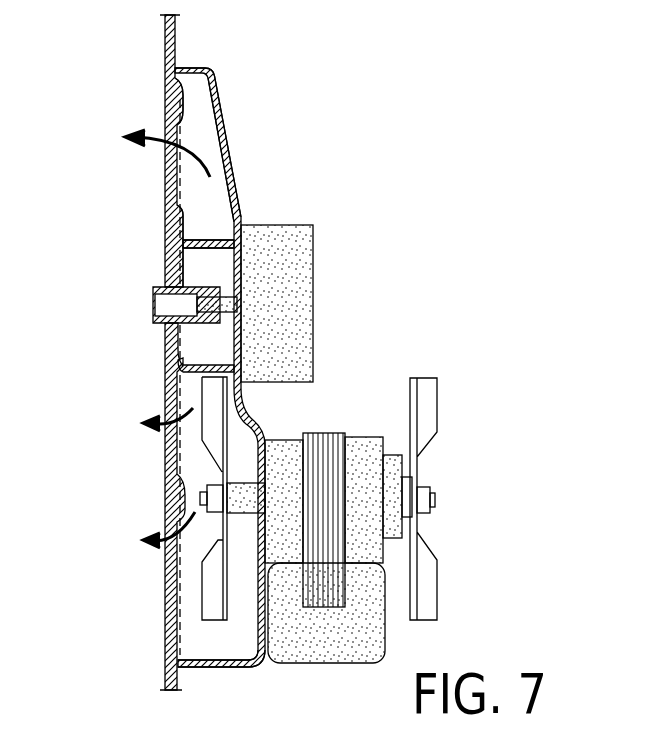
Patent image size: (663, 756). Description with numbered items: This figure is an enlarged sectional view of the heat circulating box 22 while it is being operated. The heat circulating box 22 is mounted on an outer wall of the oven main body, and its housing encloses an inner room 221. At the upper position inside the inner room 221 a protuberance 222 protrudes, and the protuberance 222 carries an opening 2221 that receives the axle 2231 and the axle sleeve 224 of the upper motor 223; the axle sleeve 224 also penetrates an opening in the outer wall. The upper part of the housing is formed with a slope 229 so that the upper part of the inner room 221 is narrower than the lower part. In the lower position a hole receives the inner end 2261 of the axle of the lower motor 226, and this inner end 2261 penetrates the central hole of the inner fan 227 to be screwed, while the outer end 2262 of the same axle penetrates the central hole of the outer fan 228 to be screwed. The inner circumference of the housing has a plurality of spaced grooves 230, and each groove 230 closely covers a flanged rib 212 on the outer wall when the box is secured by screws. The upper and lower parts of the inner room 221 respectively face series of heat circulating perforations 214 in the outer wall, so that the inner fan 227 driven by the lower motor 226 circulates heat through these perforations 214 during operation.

The heat circulating box 22 is at (241, 335).
The flanged rib 212 is at (170, 103).
The heat circulating perforations 214 is at (168, 197).
The inner room 221 is at (200, 633).
The protuberance 222 is at (205, 232).
The opening 2221 is at (224, 270).
The upper motor 223 is at (307, 270).
The axle sleeve 224 is at (133, 344).
The axle 2231 is at (222, 330).
The lower motor 226 is at (357, 432).
The inner end of the axle 2261 is at (205, 502).
The outer end of the axle 2262 is at (435, 498).
The inner fan 227 is at (207, 591).
The outer fan 228 is at (440, 594).
The slope 229 is at (225, 143).
The groove 230 is at (193, 103).